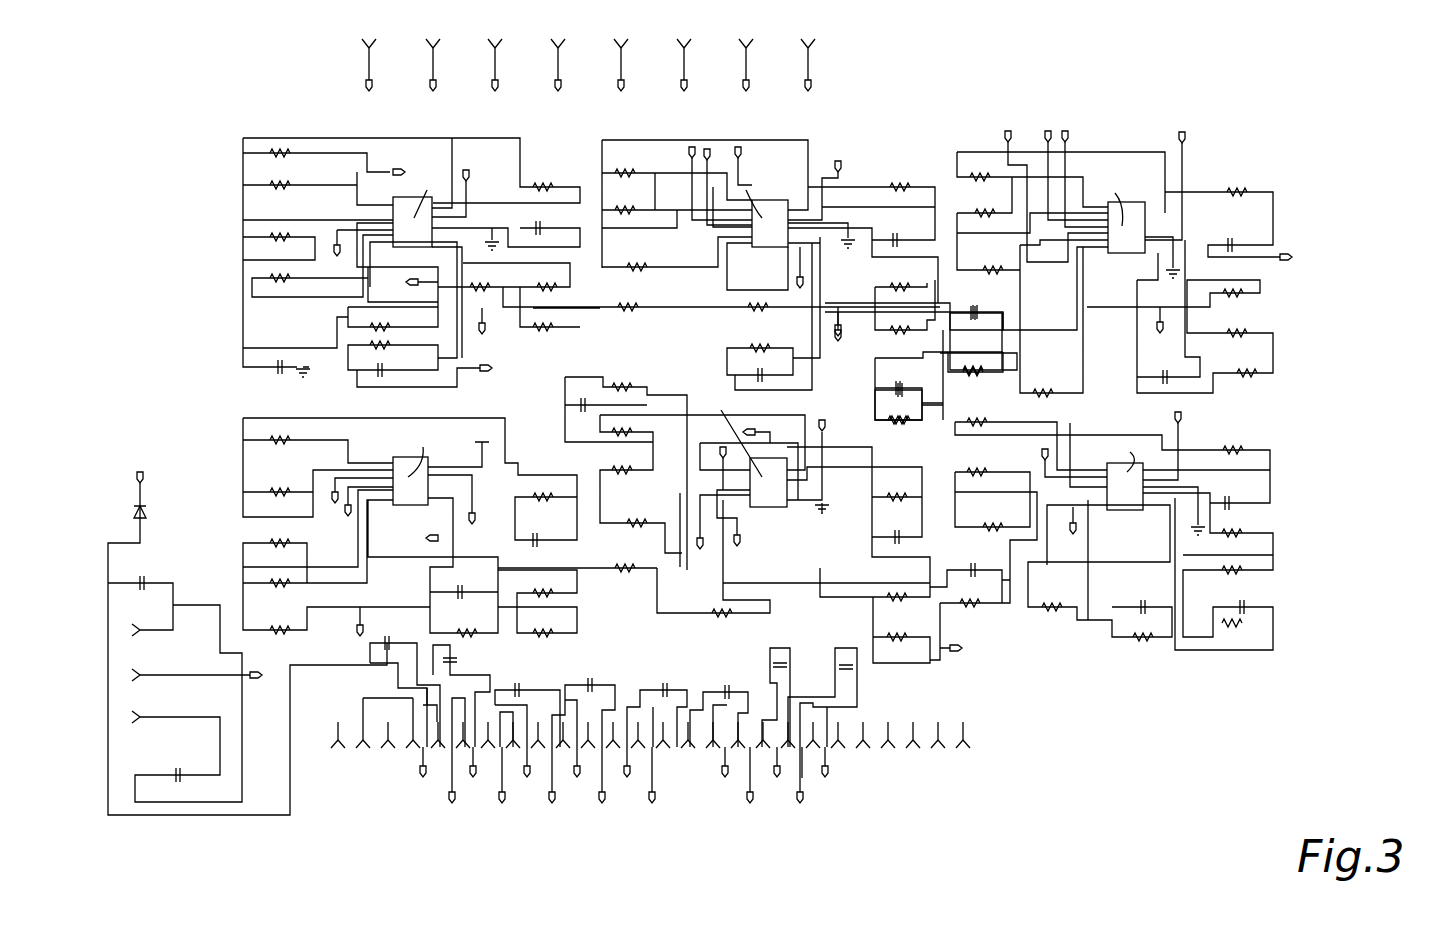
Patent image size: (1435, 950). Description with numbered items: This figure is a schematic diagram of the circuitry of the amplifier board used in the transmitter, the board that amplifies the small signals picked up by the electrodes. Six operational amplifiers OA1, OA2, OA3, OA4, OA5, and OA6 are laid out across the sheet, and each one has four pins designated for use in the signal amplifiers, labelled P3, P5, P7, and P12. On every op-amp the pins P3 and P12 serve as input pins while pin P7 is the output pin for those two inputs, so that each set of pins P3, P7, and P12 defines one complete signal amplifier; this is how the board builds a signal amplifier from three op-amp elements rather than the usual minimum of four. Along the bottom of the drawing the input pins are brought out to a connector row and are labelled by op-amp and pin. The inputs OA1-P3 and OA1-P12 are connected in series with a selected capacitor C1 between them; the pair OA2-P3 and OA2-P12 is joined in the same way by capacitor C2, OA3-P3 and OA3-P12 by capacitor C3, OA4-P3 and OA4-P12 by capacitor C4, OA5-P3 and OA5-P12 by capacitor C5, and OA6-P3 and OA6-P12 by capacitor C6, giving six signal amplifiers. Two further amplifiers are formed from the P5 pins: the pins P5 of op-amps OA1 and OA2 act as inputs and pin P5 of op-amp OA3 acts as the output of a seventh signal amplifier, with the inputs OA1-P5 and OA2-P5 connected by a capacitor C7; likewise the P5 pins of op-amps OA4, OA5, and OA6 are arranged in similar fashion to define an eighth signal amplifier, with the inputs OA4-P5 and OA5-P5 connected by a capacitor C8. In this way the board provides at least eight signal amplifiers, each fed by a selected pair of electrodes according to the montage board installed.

The op-amp OA1 is at (407, 211).
The op-amp OA2 is at (772, 209).
The op-amp OA3 is at (1136, 216).
The op-amp OA4 is at (401, 468).
The op-amp OA5 is at (742, 446).
The op-amp OA6 is at (1108, 474).
The pin P3 is at (380, 172).
The pin P5 is at (337, 237).
The pin P7 is at (252, 283).
The pin P12 is at (466, 187).
The capacitor C1 is at (381, 650).
The capacitor C2 is at (520, 685).
The capacitor C3 is at (790, 668).
The capacitor C4 is at (455, 661).
The capacitor C5 is at (588, 680).
The capacitor C6 is at (858, 668).
The capacitor C7 is at (726, 685).
The capacitor C8 is at (666, 685).
The input pin P3 of op-amp OA1 OA1-P3 is at (422, 752).
The input pin P12 of op-amp OA1 OA1-P12 is at (452, 767).
The input pin P3 of op-amp OA4 OA4-P3 is at (472, 755).
The input pin P12 of op-amp OA4 OA4-P12 is at (502, 772).
The input pin P3 of op-amp OA2 OA2-P3 is at (582, 842).
The input pin P12 of op-amp OA2 OA2-P12 is at (598, 863).
The input pin P12 of op-amp OA5 OA5-P12 is at (577, 777).
The input pin P3 of op-amp OA5 OA5-P3 is at (602, 803).
The input pin P5 of op-amp OA4 OA4-P5 is at (627, 777).
The input pin P5 of op-amp OA5 OA5-P5 is at (652, 803).
The input pin P5 of op-amp OA1 OA1-P5 is at (727, 777).
The input pin P5 of op-amp OA2 OA2-P5 is at (750, 803).
The input pin P3 of op-amp OA3 OA3-P3 is at (777, 777).
The input pin P12 of op-amp OA3 OA3-P12 is at (800, 803).
The input pin P3 of op-amp OA6 OA6-P3 is at (802, 778).
The input pin P12 of op-amp OA6 OA6-P12 is at (827, 757).